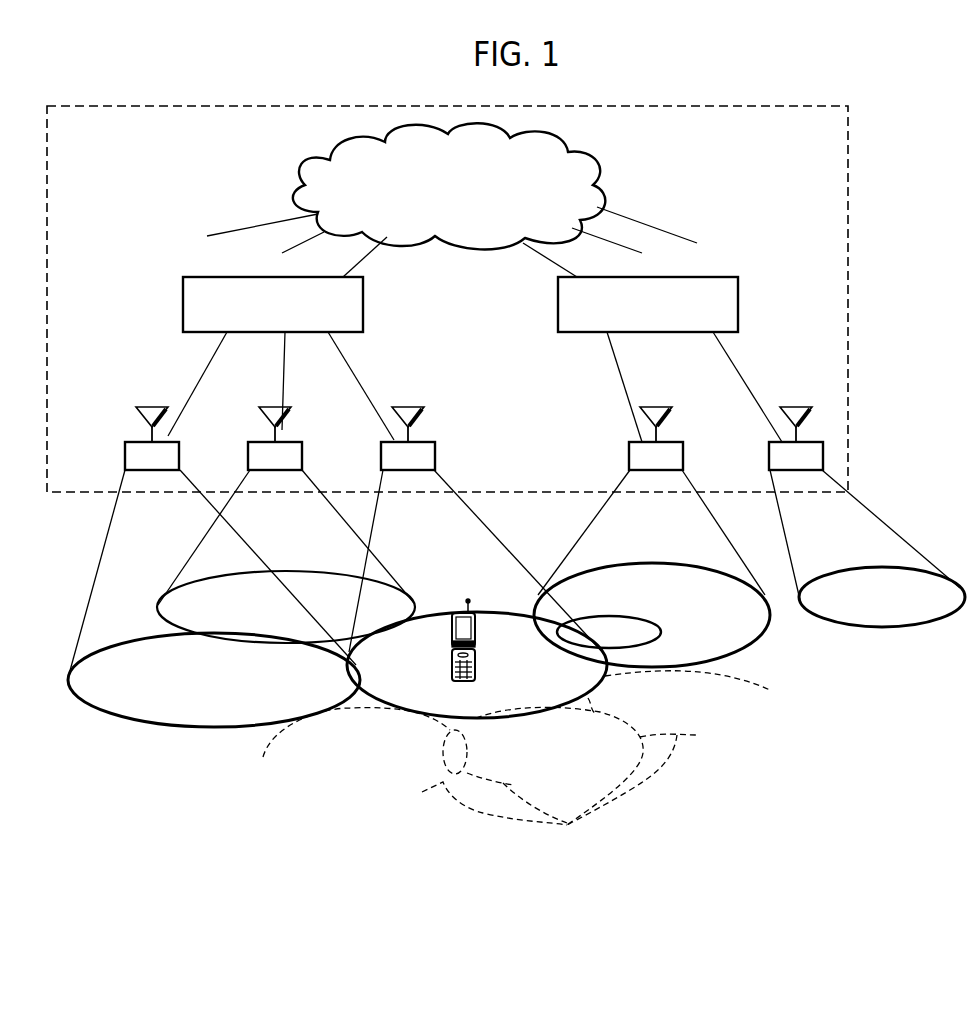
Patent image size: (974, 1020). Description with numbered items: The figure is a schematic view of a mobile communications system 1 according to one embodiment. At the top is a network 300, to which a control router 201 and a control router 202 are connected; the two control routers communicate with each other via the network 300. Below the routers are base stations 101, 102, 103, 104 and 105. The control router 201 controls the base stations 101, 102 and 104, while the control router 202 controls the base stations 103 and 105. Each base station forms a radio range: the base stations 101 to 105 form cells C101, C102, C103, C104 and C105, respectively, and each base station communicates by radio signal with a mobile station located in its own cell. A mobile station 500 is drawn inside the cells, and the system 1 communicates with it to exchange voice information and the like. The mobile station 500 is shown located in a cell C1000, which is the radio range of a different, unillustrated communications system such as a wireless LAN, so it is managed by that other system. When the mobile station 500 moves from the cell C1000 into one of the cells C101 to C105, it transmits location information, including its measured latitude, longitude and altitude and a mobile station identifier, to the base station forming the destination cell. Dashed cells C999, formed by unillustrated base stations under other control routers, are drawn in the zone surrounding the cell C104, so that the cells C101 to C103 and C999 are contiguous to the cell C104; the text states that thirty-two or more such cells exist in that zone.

The mobile communications system 1 is at (849, 294).
The network 300 is at (303, 187).
The control router 201 is at (183, 310).
The control router 202 is at (738, 302).
The base station 101 is at (126, 452).
The base station 102 is at (249, 455).
The base station 103 is at (629, 462).
The base station 104 is at (383, 455).
The base station 105 is at (769, 462).
The mobile station 500 is at (476, 671).
The cell C101 is at (122, 722).
The cell C102 is at (224, 642).
The cell C103 is at (743, 648).
The cell C104 is at (503, 723).
The cell C105 is at (908, 627).
The cell C1000 is at (653, 620).
The cells C999 is at (570, 827).